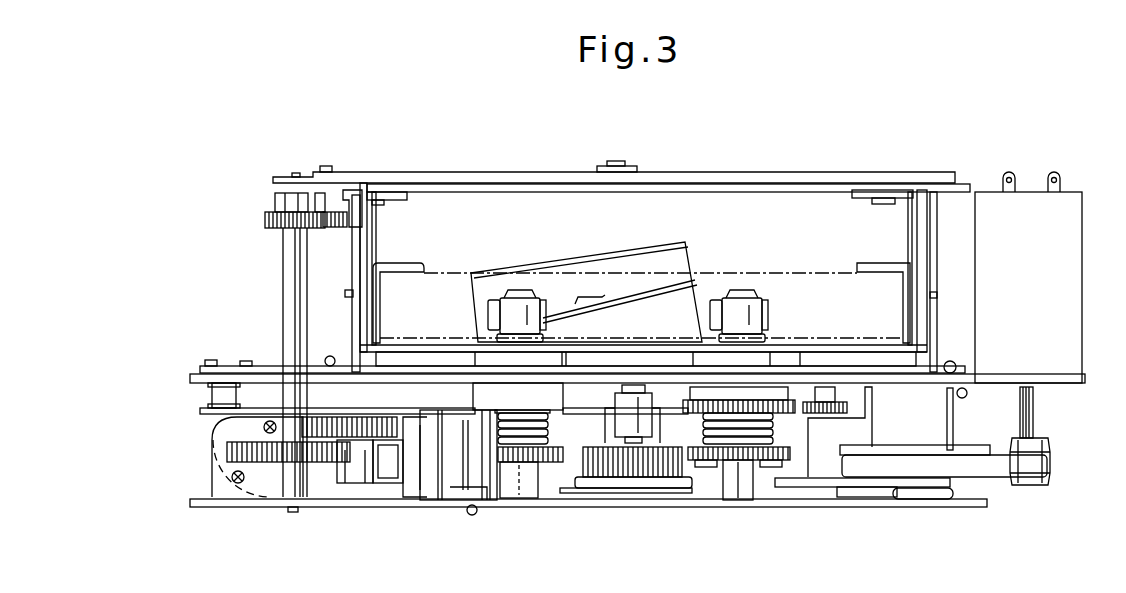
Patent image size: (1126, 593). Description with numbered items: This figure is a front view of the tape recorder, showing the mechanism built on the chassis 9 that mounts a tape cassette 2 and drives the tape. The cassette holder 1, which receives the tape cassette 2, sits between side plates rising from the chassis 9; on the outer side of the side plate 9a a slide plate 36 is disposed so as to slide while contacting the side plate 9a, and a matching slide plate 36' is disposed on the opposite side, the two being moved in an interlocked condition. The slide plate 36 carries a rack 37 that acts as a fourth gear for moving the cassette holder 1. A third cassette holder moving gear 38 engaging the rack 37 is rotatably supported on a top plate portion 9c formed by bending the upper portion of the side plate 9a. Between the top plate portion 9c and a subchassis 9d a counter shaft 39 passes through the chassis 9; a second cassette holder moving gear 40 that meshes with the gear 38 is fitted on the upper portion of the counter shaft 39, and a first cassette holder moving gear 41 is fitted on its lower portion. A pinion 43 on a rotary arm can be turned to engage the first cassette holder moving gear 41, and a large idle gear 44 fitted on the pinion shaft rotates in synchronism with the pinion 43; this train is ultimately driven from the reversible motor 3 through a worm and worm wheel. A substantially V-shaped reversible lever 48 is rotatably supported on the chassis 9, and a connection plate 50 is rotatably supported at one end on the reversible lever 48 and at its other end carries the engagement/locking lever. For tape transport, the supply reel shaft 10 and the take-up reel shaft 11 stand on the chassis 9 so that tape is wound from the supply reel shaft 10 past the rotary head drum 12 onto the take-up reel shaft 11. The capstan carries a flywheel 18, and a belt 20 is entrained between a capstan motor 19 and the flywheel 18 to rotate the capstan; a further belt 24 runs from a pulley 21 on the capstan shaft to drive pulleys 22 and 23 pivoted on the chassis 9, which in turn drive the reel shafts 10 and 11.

The cassette holder 1 is at (412, 262).
The tape cassette 2 is at (806, 277).
The reversible motor 3 is at (215, 459).
The chassis 9 is at (205, 366).
The side plate 9a is at (363, 238).
The top plate portion 9c is at (283, 177).
The subchassis 9d is at (520, 505).
The supply reel shaft 10 is at (508, 306).
The take-up reel shaft 11 is at (734, 306).
The rotary head drum 12 is at (640, 260).
The flywheel 18 is at (1000, 480).
The capstan motor 19 is at (1072, 308).
The belt 20 is at (1052, 468).
The pulley 21 is at (920, 498).
The drive pulley 22 is at (672, 482).
The drive pulley 23 is at (843, 498).
The belt 24 is at (796, 488).
The slide plate 36 is at (335, 283).
The slide plate 36' is at (950, 282).
The rack 37 is at (352, 205).
The third cassette holder moving gear 38 is at (333, 210).
The counter shaft 39 is at (283, 249).
The second cassette holder moving gear 40 is at (265, 220).
The first cassette holder moving gear 41 is at (322, 470).
The pinion 43 is at (360, 470).
The large idle gear 44 is at (385, 470).
The reversible lever 48 is at (202, 412).
The connection plate 50 is at (208, 400).